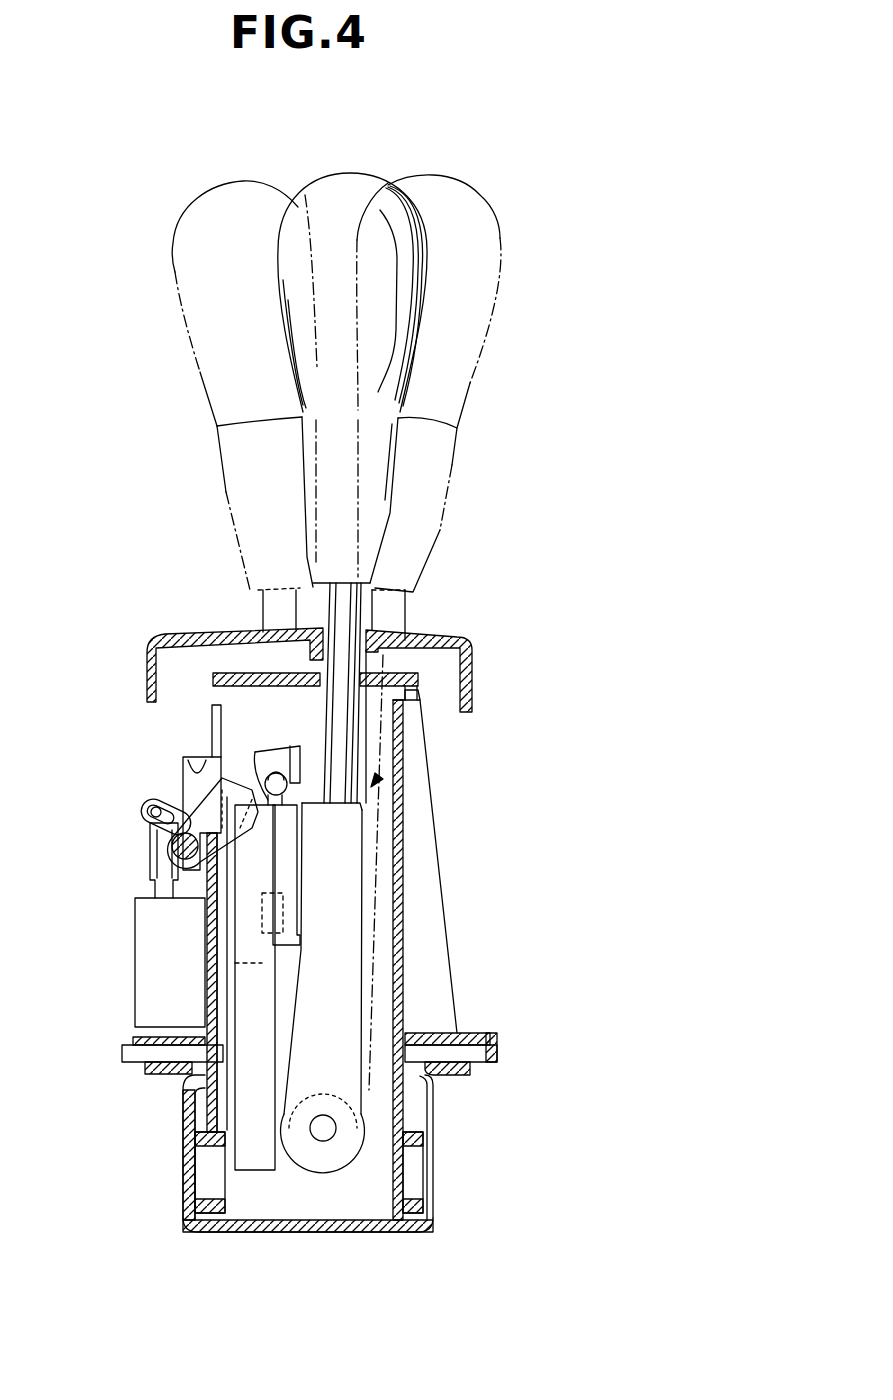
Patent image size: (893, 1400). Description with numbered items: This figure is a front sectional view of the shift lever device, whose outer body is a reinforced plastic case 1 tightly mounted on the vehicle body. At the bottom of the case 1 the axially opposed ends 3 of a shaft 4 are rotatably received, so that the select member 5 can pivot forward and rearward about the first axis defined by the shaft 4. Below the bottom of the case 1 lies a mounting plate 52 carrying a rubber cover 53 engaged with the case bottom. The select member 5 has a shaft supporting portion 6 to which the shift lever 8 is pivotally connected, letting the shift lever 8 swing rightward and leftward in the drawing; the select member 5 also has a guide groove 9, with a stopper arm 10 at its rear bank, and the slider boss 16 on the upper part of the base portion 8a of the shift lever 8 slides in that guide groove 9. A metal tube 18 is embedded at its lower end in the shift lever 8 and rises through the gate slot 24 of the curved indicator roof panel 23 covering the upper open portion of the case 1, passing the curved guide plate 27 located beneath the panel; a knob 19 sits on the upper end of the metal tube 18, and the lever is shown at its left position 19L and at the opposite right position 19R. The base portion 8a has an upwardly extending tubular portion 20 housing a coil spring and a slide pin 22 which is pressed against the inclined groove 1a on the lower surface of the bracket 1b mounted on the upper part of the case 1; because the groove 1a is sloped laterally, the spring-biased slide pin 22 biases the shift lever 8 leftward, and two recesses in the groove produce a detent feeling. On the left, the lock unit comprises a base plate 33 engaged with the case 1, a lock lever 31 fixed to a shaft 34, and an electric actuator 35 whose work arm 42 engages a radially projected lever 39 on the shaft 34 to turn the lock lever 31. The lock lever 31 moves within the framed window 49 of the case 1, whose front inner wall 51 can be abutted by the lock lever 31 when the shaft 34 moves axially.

The knob 19 is at (370, 178).
The left position 19L is at (182, 237).
The right knob position 19R is at (485, 230).
The metal tube 18 is at (362, 618).
The gate slot 24 is at (345, 635).
The indicator roof panel 23 is at (470, 640).
The guide plate 27 is at (266, 748).
The bracket 1b is at (245, 745).
The slide pin 22 is at (212, 705).
The inclined groove 1a is at (292, 745).
The stopper arm 10 is at (215, 722).
The window 49 is at (222, 750).
The front inner wall 51 is at (183, 770).
The lock lever 31 is at (200, 790).
The lever 39 is at (147, 817).
The work arm 42 is at (150, 868).
The shaft 34 is at (193, 872).
The electric actuator 35 is at (137, 987).
The base plate 33 is at (205, 975).
The select member 5 is at (258, 1072).
The axially opposed ends 3 is at (205, 1172).
The shaft 4 is at (367, 1195).
The rubber cover 53 is at (317, 1232).
The tubular portion 20 is at (285, 818).
The shift lever 8 is at (408, 783).
The case 1 is at (403, 813).
The slider boss 16 is at (277, 908).
The base portion 8a is at (372, 933).
The guide groove 9 is at (262, 950).
The mounting plate 52 is at (455, 1062).
The shaft supporting portion 6 is at (343, 1095).